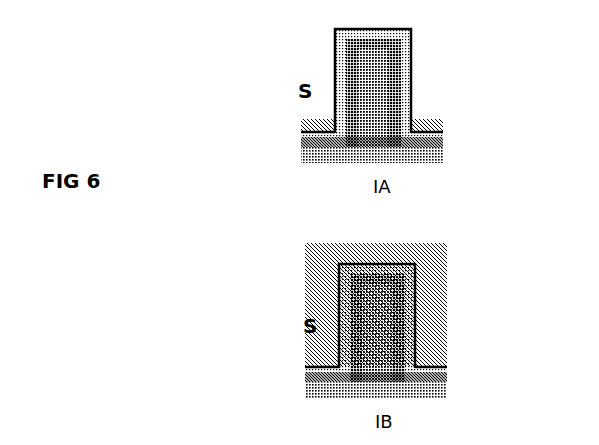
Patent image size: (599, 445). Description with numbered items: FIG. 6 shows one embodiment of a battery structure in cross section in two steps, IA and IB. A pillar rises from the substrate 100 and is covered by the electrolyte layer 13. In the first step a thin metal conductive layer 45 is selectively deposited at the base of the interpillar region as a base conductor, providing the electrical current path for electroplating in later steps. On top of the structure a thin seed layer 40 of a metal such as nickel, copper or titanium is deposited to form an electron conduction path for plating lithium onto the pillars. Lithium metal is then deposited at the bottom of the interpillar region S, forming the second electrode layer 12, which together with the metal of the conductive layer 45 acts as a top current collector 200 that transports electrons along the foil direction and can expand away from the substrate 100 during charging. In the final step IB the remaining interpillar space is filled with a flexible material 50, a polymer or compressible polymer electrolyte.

The second electrode layer 12 is at (443, 124).
The electrolyte layer 13 is at (400, 93).
The seed layer 40 is at (333, 60).
The conductive layer 45 is at (443, 138).
The flexible material 50 is at (448, 258).
The substrate 100 is at (373, 284).
The top current collector 200 is at (500, 118).